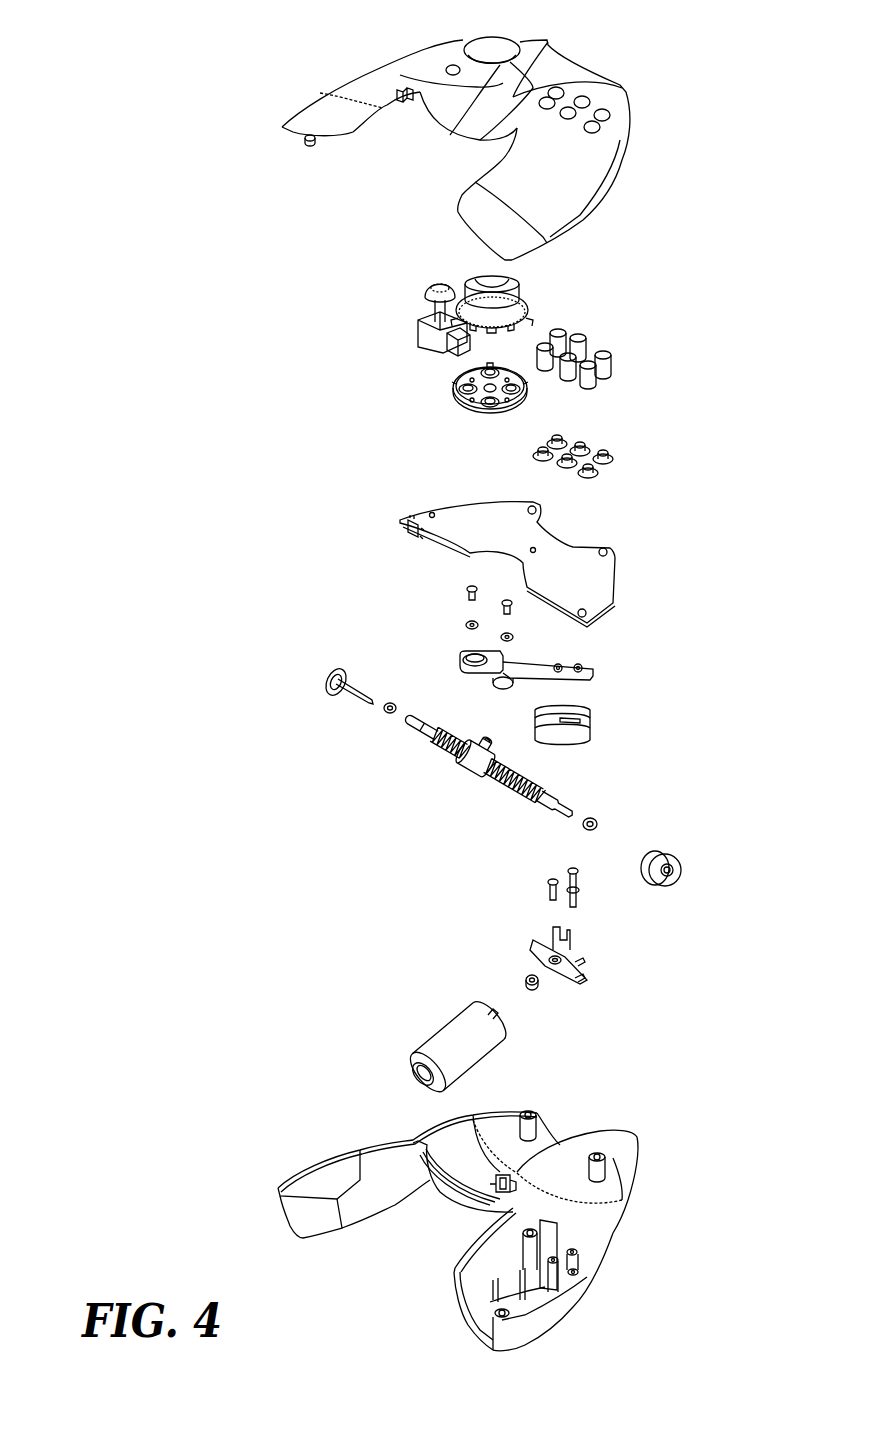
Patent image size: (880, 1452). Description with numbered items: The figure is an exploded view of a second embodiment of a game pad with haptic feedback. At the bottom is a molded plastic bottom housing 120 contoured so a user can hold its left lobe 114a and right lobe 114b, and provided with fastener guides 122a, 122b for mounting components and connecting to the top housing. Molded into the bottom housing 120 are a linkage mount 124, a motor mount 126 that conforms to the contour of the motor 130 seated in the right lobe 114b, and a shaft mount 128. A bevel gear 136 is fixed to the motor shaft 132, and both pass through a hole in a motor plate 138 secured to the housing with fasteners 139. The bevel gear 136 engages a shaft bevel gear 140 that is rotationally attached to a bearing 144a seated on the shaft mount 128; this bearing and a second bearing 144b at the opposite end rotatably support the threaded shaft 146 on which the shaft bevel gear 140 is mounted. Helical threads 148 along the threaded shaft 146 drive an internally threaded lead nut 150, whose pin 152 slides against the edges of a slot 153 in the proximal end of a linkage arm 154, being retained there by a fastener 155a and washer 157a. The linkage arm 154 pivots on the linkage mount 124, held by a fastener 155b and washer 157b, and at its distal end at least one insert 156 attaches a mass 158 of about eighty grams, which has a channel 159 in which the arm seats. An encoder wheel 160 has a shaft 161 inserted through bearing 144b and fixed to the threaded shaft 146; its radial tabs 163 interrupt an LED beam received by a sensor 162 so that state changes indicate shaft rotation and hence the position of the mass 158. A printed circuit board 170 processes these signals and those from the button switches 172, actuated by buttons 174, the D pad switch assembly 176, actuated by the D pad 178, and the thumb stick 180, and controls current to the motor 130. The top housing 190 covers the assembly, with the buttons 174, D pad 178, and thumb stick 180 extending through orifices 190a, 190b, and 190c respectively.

The top housing 190 is at (300, 108).
The orifice 190a is at (605, 117).
The orifice 190b is at (520, 48).
The orifice 190c is at (447, 71).
The thumb stick 180 is at (425, 294).
The D pad 178 is at (519, 286).
The D pad switch assembly 176 is at (457, 405).
The buttons 174 is at (590, 340).
The button switches 172 is at (613, 447).
The printed circuit board 170 is at (457, 505).
The sensor 162 is at (420, 532).
The fastener 155a is at (463, 588).
The fastener 155b is at (513, 613).
The washer 157a is at (463, 623).
The washer 157b is at (517, 637).
The slot 153 is at (460, 657).
The linkage arm 154 is at (590, 675).
The insert 156 is at (587, 667).
The mass 158 is at (593, 733).
The channel 159 is at (582, 717).
The encoder wheel 160 is at (325, 690).
The shaft 161 is at (370, 698).
The tabs 163 is at (330, 672).
The bearing 144a is at (595, 822).
The bearing 144b is at (383, 712).
The threaded shaft 146 is at (410, 723).
The helical threads 148 is at (440, 743).
The lead nut 150 is at (463, 763).
The pin 152 is at (480, 741).
The shaft bevel gear 140 is at (682, 853).
The fasteners 139 is at (578, 897).
The motor plate 138 is at (580, 964).
The bevel gear 136 is at (527, 977).
The motor 130 is at (440, 1027).
The motor shaft 132 is at (495, 1020).
The bottom housing 120 is at (313, 1160).
The left lobe 114a is at (278, 1203).
The right lobe 114b is at (473, 1337).
The fastener guide 122a is at (603, 1157).
The fastener guide 122b is at (573, 1252).
The linkage mount 124 is at (518, 1182).
The motor mount 126 is at (487, 1243).
The shaft mount 128 is at (557, 1230).